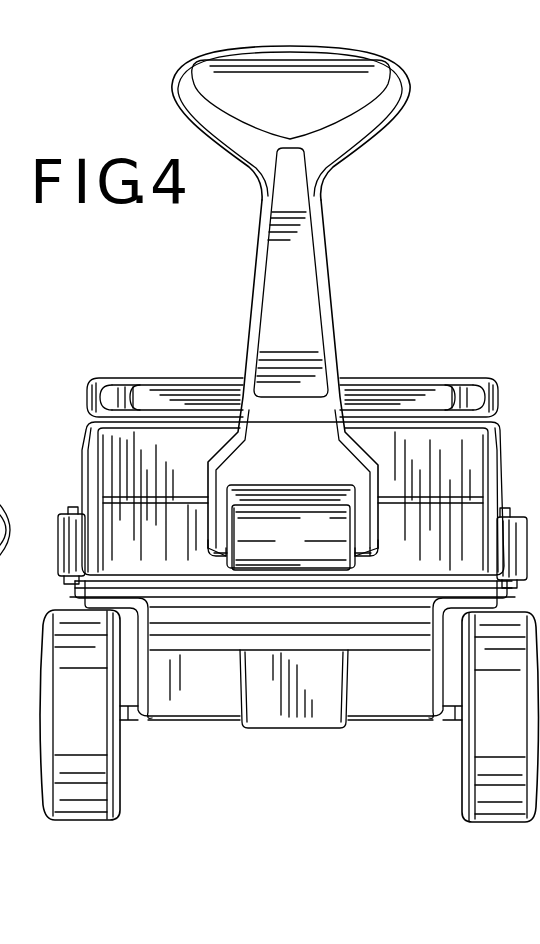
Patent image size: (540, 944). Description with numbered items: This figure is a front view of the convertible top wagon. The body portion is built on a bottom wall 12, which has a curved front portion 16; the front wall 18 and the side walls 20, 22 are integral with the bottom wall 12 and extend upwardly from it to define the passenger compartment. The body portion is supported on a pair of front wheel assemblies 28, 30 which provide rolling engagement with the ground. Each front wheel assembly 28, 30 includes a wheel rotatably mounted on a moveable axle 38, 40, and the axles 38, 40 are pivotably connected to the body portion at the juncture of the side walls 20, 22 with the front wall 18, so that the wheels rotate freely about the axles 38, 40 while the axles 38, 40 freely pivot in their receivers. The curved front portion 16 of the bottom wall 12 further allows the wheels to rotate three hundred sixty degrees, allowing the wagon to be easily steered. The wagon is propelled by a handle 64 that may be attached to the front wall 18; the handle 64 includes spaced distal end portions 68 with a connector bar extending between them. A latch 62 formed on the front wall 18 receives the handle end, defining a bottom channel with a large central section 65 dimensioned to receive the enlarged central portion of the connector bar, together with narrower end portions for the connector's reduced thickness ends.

The bottom wall 12 is at (297, 728).
The curved front portion 16 is at (211, 660).
The front wall 18 is at (200, 458).
The side wall 20 is at (87, 423).
The side wall 22 is at (502, 438).
The front wheel assembly 28 is at (125, 750).
The front wheel assembly 30 is at (453, 728).
The moveable axle 38 is at (152, 702).
The moveable axle 40 is at (432, 678).
The latch 62 is at (300, 546).
The handle 64 is at (320, 276).
The large central section 65 is at (0, 500).
The distal end portions 68 is at (222, 523).